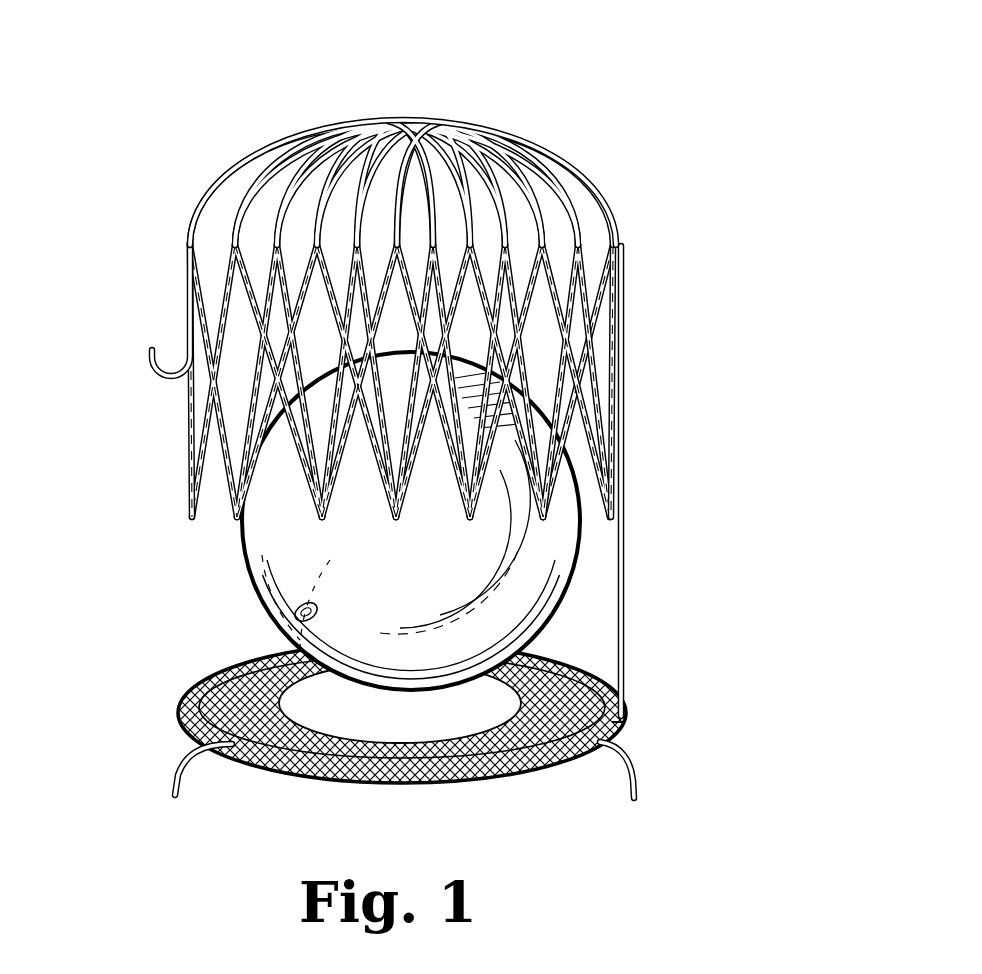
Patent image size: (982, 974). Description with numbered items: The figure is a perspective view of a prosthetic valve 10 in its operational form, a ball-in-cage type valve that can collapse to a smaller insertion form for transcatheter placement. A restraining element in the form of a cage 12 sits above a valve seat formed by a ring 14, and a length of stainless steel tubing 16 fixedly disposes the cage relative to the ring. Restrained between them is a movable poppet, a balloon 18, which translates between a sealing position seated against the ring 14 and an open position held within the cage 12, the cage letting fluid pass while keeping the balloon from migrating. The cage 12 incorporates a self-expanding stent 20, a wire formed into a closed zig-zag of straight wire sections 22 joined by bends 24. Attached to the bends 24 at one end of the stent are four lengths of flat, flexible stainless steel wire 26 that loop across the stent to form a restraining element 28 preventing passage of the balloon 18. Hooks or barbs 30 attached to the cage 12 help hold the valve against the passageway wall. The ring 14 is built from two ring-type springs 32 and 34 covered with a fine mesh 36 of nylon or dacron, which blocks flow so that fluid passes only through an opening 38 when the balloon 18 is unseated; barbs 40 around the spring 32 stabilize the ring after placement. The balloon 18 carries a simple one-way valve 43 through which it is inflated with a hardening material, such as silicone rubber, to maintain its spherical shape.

The prosthetic valve 10 is at (654, 111).
The cage 12 is at (622, 246).
The ring 14 is at (642, 745).
The stainless steel tubing 16 is at (625, 603).
The balloon 18 is at (250, 548).
The self-expanding stent 20 is at (186, 414).
The straight wire sections 22 is at (565, 402).
The bends 24 is at (597, 227).
The flat flexible stainless steel wire 26 is at (210, 180).
The restraining element 28 is at (420, 117).
The hooks or barbs 30 is at (152, 347).
The ring-type spring 32 is at (250, 775).
The ring-type spring 34 is at (312, 712).
The fine mesh 36 is at (226, 665).
The opening 38 is at (620, 729).
The barbs 40 is at (172, 785).
The one-way valve 43 is at (295, 609).